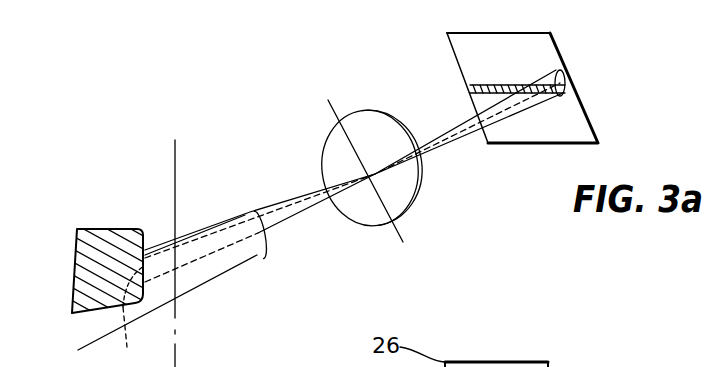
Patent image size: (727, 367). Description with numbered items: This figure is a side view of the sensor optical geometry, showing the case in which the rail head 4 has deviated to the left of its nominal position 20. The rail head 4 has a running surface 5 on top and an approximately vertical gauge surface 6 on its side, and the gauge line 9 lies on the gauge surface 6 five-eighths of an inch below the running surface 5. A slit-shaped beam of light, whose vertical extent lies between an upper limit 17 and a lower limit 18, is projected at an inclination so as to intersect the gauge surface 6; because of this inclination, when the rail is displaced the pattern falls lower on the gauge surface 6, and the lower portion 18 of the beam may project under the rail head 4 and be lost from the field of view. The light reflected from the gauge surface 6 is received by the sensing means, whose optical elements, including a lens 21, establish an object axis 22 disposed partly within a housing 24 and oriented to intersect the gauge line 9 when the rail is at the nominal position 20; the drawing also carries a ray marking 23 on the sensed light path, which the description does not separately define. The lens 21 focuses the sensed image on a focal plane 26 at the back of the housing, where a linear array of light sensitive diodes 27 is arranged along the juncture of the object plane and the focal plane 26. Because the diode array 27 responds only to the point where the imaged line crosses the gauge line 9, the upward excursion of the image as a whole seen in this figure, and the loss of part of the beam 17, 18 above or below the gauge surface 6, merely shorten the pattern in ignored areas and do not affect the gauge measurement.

The rail head 4 is at (64, 270).
The running surface 5 is at (110, 229).
The gauge surface 6 is at (145, 240).
The gauge line 9 is at (128, 337).
The upper limit of beam 17 is at (218, 223).
The lower limit of beam 18 is at (228, 272).
The nominal position line 20 is at (175, 180).
The lens 21 is at (326, 140).
The object axis 22 is at (268, 262).
The upper marginal ray 23 is at (443, 134).
The housing 24 is at (452, 146).
The focal plane 26 is at (454, 53).
The linear array of light sensitive diodes 27 is at (470, 88).